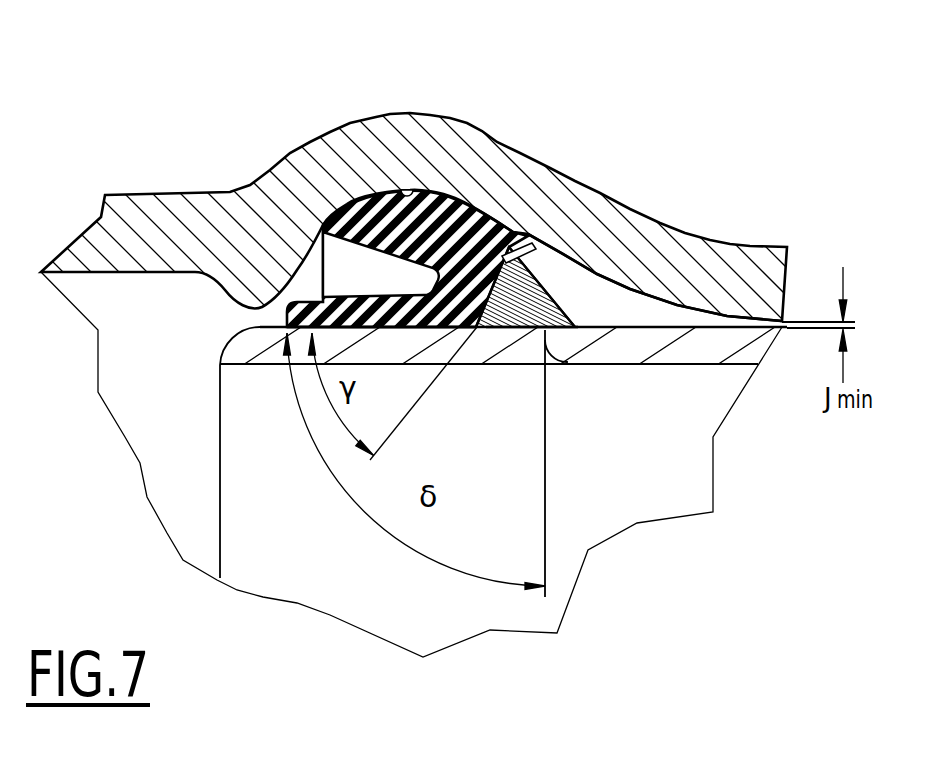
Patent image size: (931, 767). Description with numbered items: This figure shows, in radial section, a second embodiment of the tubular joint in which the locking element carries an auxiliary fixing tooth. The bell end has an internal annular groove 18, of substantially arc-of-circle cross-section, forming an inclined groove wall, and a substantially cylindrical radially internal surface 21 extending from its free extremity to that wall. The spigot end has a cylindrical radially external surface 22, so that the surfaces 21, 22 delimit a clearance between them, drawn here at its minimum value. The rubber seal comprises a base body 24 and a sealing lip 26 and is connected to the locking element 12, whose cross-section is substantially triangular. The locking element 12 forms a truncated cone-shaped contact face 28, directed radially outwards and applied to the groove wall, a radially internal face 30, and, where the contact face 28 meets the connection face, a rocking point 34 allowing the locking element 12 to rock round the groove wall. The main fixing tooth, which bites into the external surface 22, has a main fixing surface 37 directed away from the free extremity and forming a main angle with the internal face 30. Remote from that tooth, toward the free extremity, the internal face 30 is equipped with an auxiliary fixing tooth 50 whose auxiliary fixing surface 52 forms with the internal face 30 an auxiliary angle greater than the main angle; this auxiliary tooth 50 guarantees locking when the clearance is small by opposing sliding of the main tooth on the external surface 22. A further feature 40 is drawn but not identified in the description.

The locking element 12 is at (544, 290).
The internal annular groove 18 is at (312, 268).
The radially internal surface 21 is at (730, 352).
The radially external surface 22 is at (624, 308).
The base body 24 is at (462, 198).
The sealing lip 26 is at (373, 312).
The contact face 28 is at (580, 274).
The radially internal face 30 is at (496, 345).
The rocking point 34 is at (508, 242).
The main fixing surface 37 is at (443, 332).
The groove 40 is at (521, 248).
The auxiliary fixing tooth 50 is at (557, 340).
The auxiliary fixing surface 52 is at (527, 345).